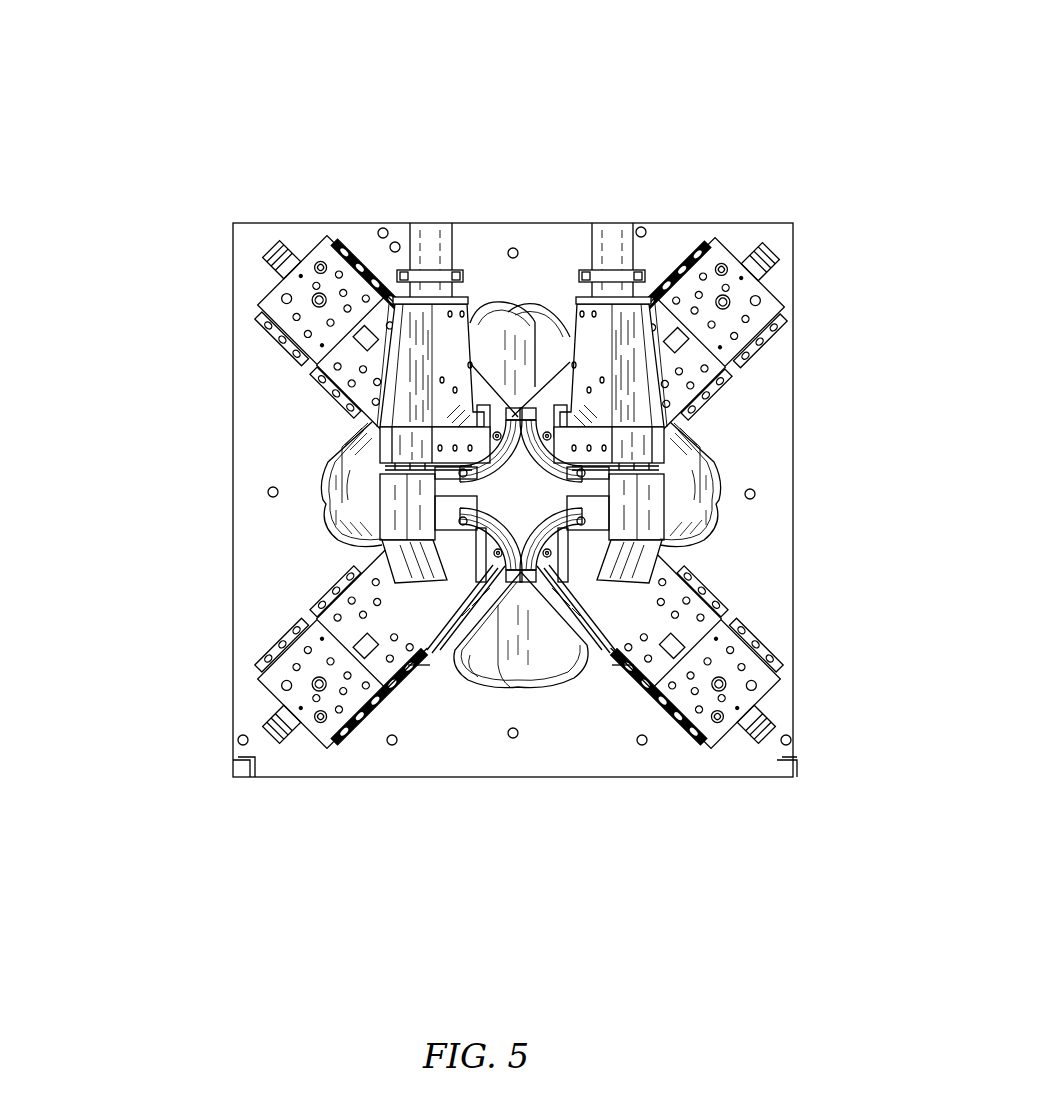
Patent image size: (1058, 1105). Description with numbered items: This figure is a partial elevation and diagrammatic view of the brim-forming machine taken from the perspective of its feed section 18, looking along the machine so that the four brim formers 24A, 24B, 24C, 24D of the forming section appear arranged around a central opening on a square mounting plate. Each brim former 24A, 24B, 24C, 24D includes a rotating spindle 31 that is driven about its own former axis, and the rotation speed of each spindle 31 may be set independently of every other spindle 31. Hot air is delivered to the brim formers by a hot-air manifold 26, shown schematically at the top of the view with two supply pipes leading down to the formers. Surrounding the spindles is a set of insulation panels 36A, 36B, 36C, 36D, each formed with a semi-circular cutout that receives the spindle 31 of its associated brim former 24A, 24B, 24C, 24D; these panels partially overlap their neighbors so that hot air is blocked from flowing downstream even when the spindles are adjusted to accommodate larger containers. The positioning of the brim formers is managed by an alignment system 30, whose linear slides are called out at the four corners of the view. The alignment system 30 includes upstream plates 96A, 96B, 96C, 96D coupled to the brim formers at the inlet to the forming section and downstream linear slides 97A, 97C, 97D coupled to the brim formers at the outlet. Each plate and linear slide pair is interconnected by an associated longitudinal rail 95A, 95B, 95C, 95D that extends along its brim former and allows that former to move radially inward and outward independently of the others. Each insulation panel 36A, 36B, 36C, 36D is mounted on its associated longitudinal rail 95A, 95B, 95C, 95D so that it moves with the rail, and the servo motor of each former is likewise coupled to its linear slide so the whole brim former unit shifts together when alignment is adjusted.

The feed section 18 is at (825, 495).
The brim former 24A is at (695, 480).
The brim former 24B is at (548, 580).
The brim former 24C is at (338, 573).
The brim former 24D is at (448, 491).
The hot-air manifold 26 is at (607, 248).
The alignment system 30 is at (715, 850).
The rotating spindle 31 is at (523, 437).
The insulation panel 36A is at (710, 445).
The insulation panel 36B is at (577, 667).
The insulation panel 36C is at (470, 673).
The insulation panel 36D is at (353, 430).
The longitudinal rail 95A is at (730, 380).
The longitudinal rail 95B is at (618, 682).
The longitudinal rail 95C is at (338, 573).
The longitudinal rail 95D is at (323, 393).
The upstream plate 96A is at (667, 350).
The upstream plate 96B is at (630, 665).
The upstream plate 96C is at (423, 652).
The upstream plate 96D is at (373, 340).
The downstream linear slide 97A is at (766, 303).
The downstream linear slide 97C is at (262, 684).
The downstream linear slide 97D is at (278, 306).